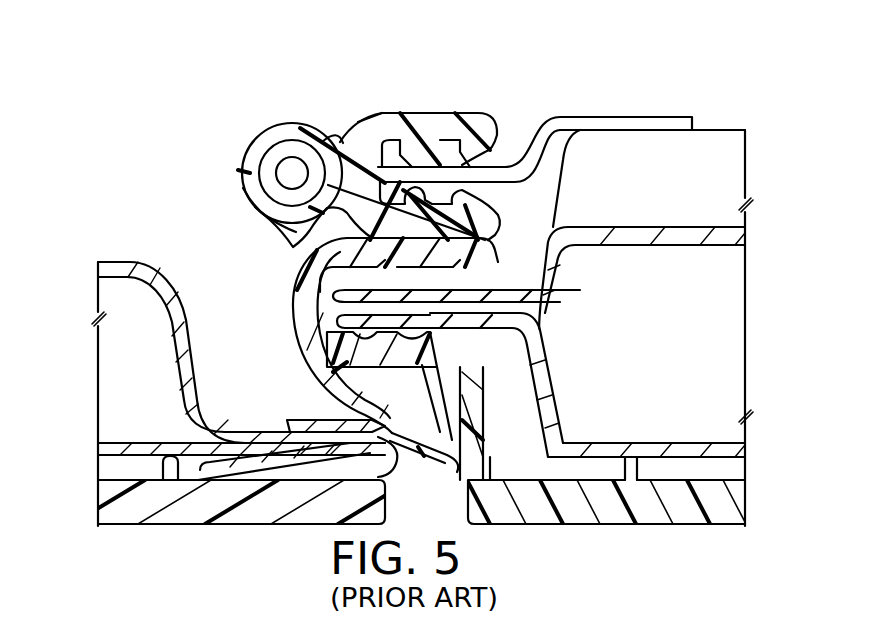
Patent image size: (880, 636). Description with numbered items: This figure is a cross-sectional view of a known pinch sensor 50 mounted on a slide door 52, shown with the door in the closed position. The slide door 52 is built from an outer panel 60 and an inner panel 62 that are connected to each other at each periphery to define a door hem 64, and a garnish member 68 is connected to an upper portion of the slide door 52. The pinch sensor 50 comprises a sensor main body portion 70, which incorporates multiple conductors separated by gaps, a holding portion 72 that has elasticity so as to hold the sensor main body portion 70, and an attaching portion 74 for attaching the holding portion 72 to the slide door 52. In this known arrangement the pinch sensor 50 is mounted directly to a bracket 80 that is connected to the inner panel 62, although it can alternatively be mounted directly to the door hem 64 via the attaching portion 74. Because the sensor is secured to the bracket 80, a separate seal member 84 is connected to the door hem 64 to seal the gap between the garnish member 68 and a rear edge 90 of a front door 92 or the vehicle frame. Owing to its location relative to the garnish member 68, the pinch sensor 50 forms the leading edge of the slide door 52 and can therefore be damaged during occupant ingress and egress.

The pinch sensor 50 is at (222, 136).
The slide door 52 is at (656, 538).
The outer panel 60 is at (662, 446).
The inner panel 62 is at (716, 237).
The door hem 64 is at (342, 312).
The garnish member 68 is at (578, 512).
The sensor main body portion 70 is at (292, 168).
The holding portion 72 is at (270, 132).
The attaching portion 74 is at (442, 120).
The bracket 80 is at (565, 118).
The seal member 84 is at (296, 310).
The rear edge 90 is at (385, 443).
The front door 92 is at (150, 256).